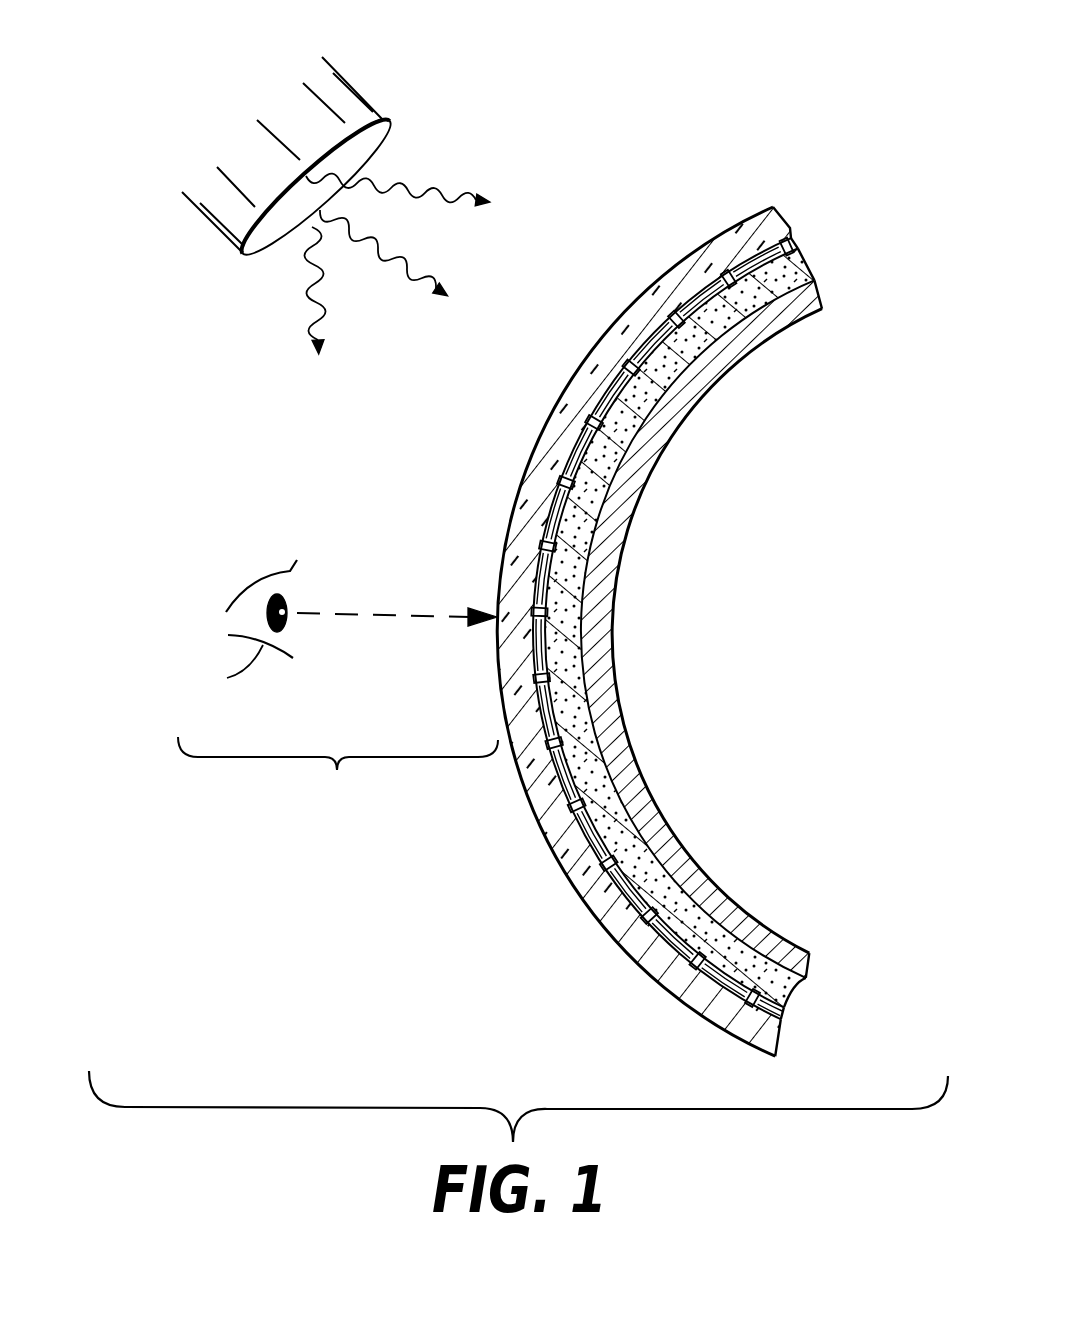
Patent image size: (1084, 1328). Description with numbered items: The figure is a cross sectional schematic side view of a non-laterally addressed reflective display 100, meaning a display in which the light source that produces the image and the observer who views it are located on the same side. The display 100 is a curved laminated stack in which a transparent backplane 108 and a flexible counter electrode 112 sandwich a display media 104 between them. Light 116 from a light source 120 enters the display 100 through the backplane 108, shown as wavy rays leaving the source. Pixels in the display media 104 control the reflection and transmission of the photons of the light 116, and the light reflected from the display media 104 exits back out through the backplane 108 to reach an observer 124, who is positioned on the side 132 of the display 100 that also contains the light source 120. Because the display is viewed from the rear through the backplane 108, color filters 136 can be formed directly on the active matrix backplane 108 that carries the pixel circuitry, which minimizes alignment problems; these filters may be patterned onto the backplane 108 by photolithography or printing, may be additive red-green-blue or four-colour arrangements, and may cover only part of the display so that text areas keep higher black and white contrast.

The reflective display 100 is at (636, 603).
The display media 104 is at (787, 277).
The backplane 108 is at (773, 221).
The counter electrode 112 is at (692, 376).
The light 116 is at (355, 232).
The light source 120 is at (246, 265).
The observer 124 is at (348, 641).
The side 132 is at (338, 777).
The color filters 136 is at (797, 242).